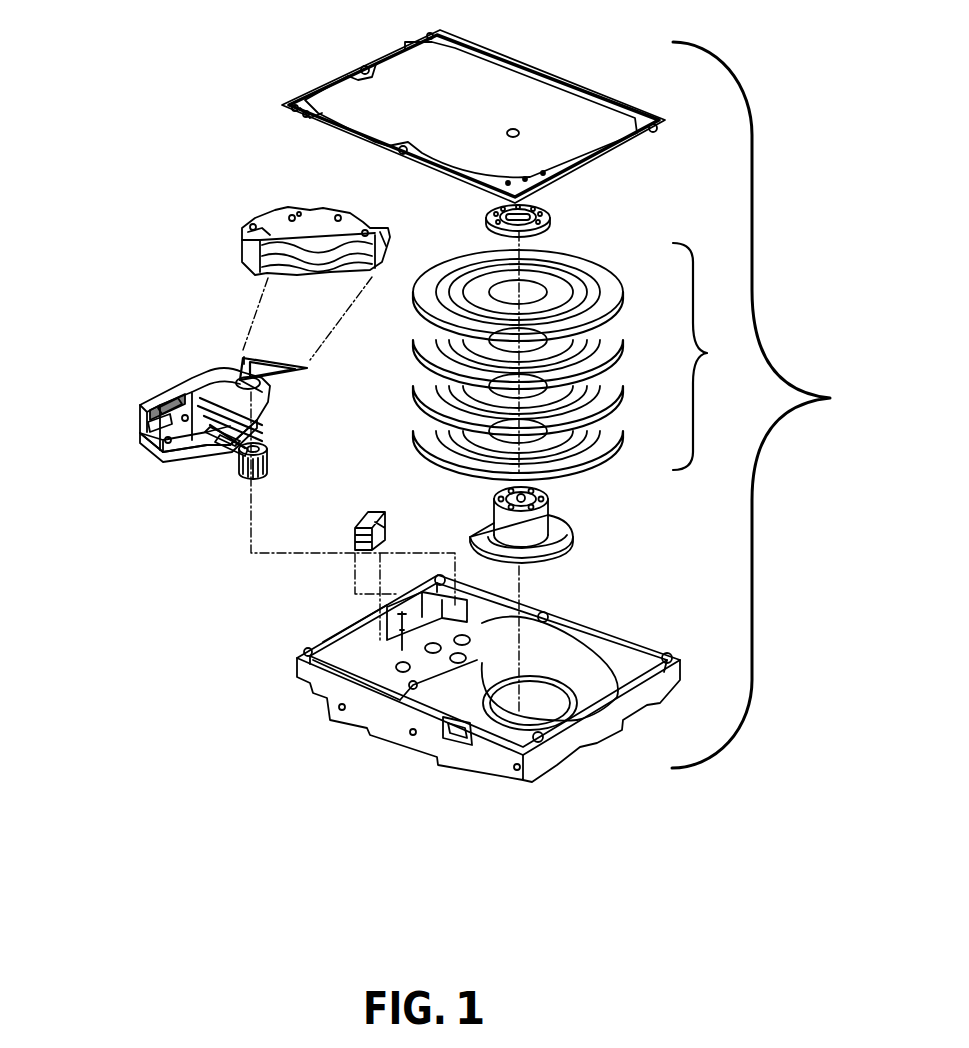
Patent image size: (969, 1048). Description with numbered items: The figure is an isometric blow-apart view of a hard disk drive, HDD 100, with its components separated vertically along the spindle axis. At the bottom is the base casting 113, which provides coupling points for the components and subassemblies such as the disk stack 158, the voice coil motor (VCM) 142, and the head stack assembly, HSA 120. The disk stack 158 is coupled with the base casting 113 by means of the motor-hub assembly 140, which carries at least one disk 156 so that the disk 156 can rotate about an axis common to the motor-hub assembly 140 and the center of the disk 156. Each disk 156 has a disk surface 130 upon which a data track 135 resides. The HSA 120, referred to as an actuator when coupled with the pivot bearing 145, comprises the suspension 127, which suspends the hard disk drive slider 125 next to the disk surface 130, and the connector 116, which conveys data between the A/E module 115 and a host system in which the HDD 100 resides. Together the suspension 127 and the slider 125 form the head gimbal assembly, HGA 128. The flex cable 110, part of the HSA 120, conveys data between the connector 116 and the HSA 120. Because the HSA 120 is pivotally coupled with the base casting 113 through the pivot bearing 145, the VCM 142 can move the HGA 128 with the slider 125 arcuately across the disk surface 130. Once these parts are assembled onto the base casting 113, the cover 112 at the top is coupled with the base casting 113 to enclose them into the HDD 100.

The HDD 100 is at (775, 405).
The cover 112 is at (560, 122).
The base casting 113 is at (310, 677).
The disk surface 130 is at (612, 466).
The data track 135 is at (473, 262).
The motor-hub assembly 140 is at (567, 527).
The voice coil motor (VCM) 142 is at (253, 372).
The pivot bearing 145 is at (243, 480).
The disk 156 is at (413, 430).
The disk stack 158 is at (707, 353).
The flex cable 110 is at (207, 412).
The A/E module 115 is at (235, 370).
The connector 116 is at (145, 395).
The HSA 120 is at (137, 382).
The hard disk drive slider 125 is at (233, 437).
The suspension 127 is at (157, 368).
The head gimbal assembly (HGA) 128 is at (236, 438).